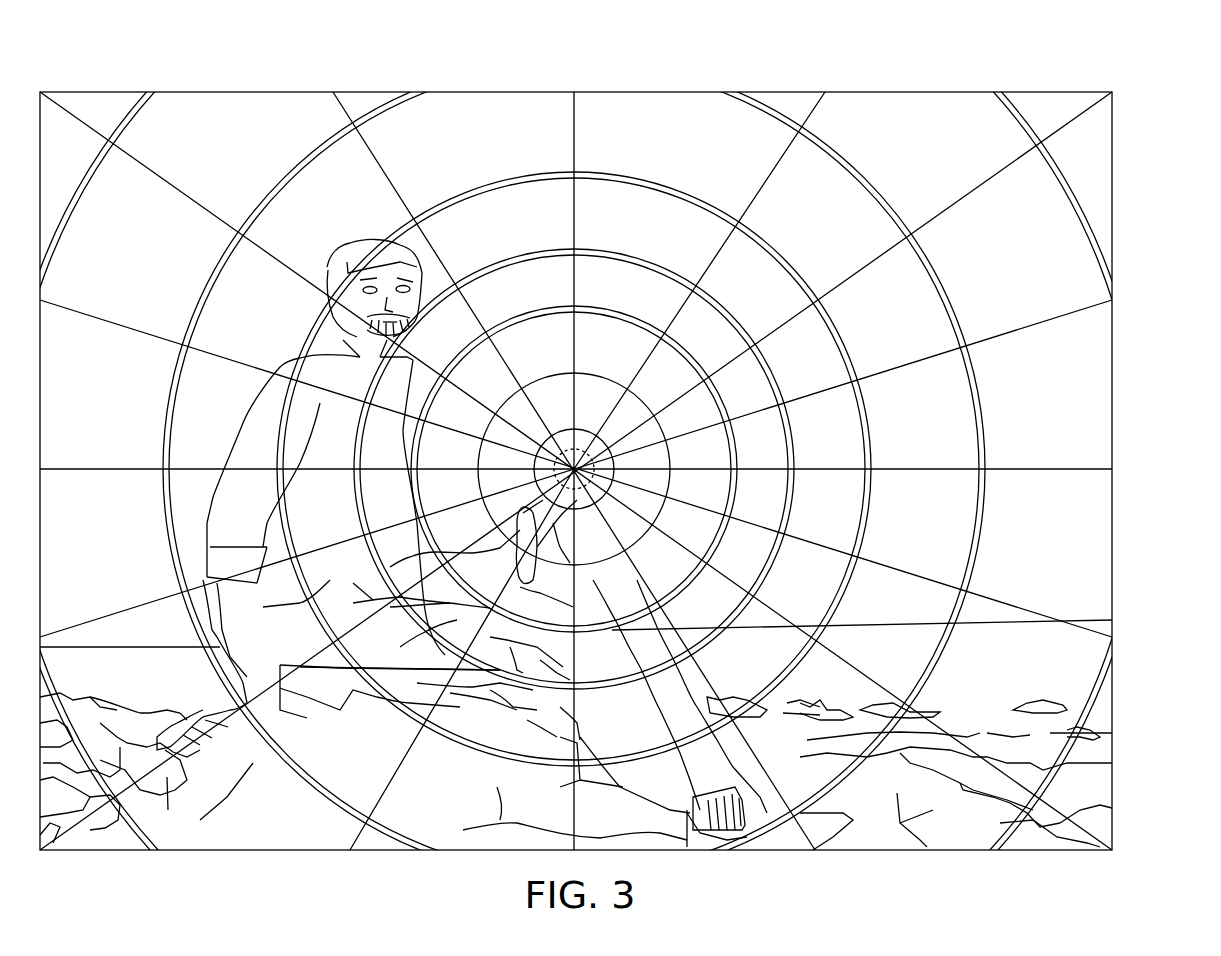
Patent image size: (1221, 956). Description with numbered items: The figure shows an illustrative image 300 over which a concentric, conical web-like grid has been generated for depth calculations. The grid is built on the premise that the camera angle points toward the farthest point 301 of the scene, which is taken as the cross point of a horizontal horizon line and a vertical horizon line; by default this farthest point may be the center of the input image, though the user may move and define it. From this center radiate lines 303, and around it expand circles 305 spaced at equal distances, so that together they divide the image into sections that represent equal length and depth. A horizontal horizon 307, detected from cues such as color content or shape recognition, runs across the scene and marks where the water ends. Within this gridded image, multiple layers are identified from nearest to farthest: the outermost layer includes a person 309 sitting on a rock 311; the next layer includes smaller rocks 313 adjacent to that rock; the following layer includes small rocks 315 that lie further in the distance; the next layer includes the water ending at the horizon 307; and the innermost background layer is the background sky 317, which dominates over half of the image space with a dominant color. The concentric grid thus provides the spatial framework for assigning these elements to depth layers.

The image 300 is at (1170, 86).
The farthest point 301 is at (583, 453).
The lines 303 is at (884, 356).
The circles 305 is at (777, 252).
The horizon 307 is at (853, 627).
The person 309 is at (293, 368).
The rock 311 is at (250, 837).
The smaller rocks 313 is at (113, 707).
The small rocks 315 is at (733, 693).
The background sky 317 is at (1093, 152).